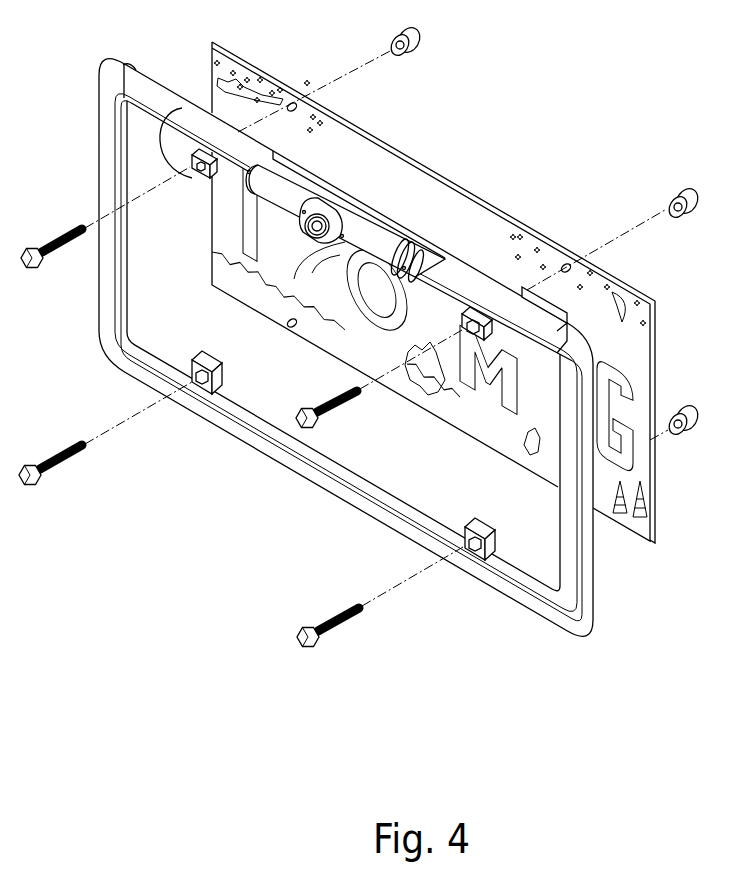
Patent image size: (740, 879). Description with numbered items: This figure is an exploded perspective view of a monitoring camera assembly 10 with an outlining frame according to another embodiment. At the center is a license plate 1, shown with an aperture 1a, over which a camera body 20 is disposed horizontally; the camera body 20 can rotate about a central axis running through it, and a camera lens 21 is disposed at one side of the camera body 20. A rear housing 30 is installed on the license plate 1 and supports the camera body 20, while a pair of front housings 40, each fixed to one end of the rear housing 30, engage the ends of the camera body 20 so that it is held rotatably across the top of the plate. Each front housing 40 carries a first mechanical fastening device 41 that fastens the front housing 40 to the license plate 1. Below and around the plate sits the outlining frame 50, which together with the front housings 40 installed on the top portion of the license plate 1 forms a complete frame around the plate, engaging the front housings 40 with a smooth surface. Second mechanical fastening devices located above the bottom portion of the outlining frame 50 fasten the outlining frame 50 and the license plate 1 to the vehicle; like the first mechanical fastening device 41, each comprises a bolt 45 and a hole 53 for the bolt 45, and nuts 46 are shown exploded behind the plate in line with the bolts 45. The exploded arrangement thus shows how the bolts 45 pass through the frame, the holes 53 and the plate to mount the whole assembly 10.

The license plate 1 is at (650, 380).
The mounting hole of license plate 1a is at (566, 263).
The monitoring camera assembly 10 is at (359, 162).
The camera body 20 is at (373, 237).
The camera lens 21 is at (330, 212).
The rear housing 30 is at (322, 178).
The front housing 40 is at (193, 116).
The first mechanical fastening device 41 is at (180, 108).
The bolt 45 is at (30, 265).
The nut 46 is at (416, 48).
The outlining frame 50 is at (604, 565).
The hole 53 is at (206, 397).